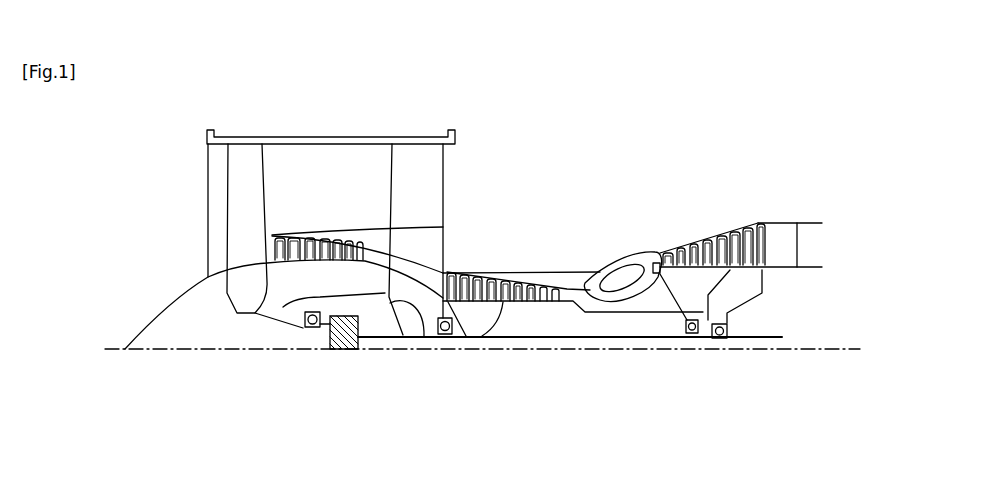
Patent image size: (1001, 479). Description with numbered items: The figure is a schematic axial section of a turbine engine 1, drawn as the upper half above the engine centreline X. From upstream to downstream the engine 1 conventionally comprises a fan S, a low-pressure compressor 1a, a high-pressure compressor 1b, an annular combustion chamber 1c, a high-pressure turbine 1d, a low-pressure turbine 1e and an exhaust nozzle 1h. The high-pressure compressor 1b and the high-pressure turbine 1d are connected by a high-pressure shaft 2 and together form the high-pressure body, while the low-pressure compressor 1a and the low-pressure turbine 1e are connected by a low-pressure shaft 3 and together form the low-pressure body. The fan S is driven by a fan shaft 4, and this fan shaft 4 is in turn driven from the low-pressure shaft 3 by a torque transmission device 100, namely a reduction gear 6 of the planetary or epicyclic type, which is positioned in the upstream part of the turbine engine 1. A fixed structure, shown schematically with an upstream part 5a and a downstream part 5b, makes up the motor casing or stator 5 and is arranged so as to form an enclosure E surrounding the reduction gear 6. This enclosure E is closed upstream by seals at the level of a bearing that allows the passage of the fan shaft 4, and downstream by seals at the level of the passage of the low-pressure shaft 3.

The turbine engine 1 is at (556, 174).
The low-pressure compressor 1a is at (290, 234).
The high-pressure compressor 1b is at (478, 276).
The annular combustion chamber 1c is at (618, 272).
The high-pressure turbine 1d is at (652, 266).
The low-pressure turbine 1e is at (758, 232).
The exhaust nozzle 1h is at (810, 243).
The high-pressure shaft 2 is at (618, 314).
The low-pressure shaft 3 is at (530, 340).
The fan shaft 4 is at (294, 330).
The motor casing or stator 5 is at (372, 294).
The upstream part 5a is at (288, 305).
The downstream part 5b is at (420, 338).
The reduction gear 6 is at (341, 340).
The torque transmission device 100 is at (343, 367).
The enclosure E is at (376, 305).
The fan S is at (236, 195).
The rotational axis X is at (107, 353).